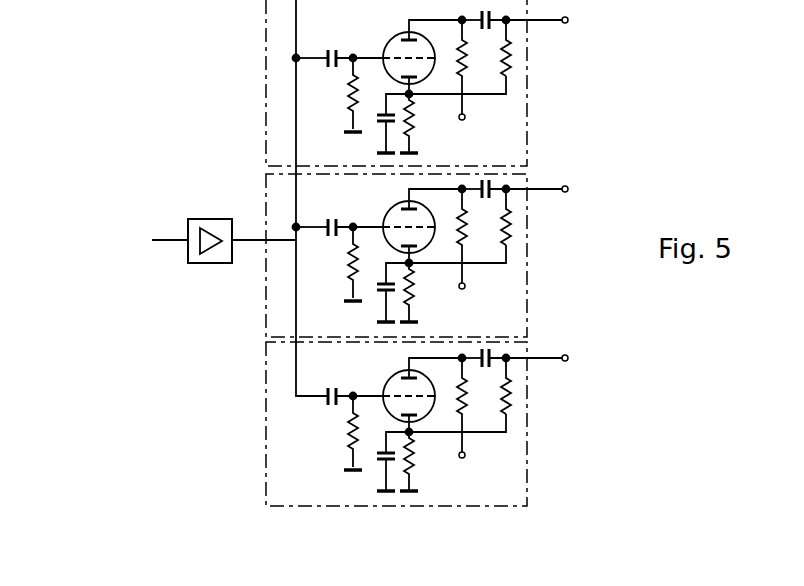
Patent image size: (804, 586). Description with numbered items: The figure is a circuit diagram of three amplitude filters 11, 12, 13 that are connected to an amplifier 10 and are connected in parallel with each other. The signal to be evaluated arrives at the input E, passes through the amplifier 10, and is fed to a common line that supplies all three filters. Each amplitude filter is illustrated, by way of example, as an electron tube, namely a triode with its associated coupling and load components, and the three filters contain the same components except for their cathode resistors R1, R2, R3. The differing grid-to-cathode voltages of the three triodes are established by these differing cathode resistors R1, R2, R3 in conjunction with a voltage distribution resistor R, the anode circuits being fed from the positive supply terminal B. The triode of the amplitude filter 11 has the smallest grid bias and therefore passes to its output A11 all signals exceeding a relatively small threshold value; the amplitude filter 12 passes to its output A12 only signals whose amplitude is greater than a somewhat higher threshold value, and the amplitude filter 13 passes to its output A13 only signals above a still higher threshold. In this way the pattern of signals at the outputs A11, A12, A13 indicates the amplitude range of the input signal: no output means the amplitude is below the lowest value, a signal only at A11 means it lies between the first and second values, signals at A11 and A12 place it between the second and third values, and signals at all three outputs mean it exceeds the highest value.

The amplifier 10 is at (205, 225).
The amplitude filter 11 is at (413, 424).
The amplitude filter 12 is at (414, 255).
The amplitude filter 13 is at (411, 83).
The input E is at (250, 238).
The cathode resistor R1 is at (422, 461).
The cathode resistor R2 is at (422, 292).
The cathode resistor R3 is at (422, 123).
The voltage distribution resistor R is at (506, 58).
The supply voltage terminal B is at (471, 251).
The output A11 is at (586, 358).
The output A12 is at (586, 189).
The output A13 is at (586, 20).